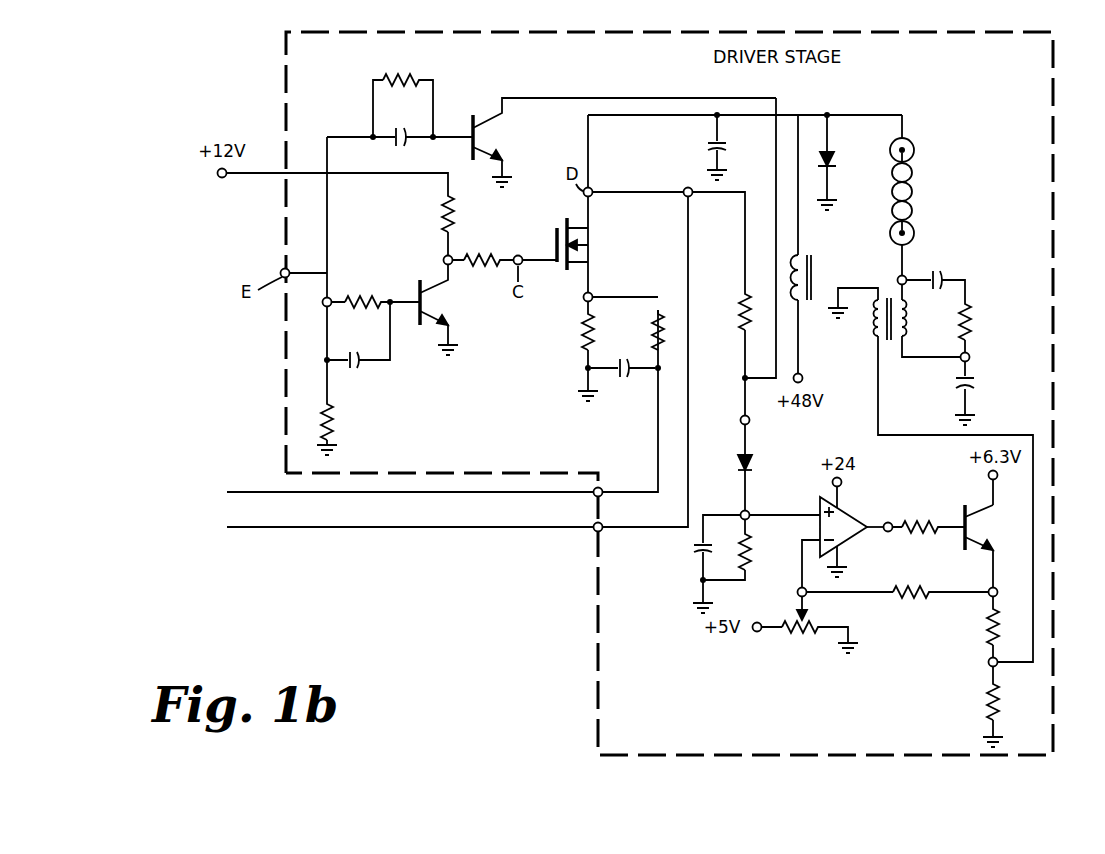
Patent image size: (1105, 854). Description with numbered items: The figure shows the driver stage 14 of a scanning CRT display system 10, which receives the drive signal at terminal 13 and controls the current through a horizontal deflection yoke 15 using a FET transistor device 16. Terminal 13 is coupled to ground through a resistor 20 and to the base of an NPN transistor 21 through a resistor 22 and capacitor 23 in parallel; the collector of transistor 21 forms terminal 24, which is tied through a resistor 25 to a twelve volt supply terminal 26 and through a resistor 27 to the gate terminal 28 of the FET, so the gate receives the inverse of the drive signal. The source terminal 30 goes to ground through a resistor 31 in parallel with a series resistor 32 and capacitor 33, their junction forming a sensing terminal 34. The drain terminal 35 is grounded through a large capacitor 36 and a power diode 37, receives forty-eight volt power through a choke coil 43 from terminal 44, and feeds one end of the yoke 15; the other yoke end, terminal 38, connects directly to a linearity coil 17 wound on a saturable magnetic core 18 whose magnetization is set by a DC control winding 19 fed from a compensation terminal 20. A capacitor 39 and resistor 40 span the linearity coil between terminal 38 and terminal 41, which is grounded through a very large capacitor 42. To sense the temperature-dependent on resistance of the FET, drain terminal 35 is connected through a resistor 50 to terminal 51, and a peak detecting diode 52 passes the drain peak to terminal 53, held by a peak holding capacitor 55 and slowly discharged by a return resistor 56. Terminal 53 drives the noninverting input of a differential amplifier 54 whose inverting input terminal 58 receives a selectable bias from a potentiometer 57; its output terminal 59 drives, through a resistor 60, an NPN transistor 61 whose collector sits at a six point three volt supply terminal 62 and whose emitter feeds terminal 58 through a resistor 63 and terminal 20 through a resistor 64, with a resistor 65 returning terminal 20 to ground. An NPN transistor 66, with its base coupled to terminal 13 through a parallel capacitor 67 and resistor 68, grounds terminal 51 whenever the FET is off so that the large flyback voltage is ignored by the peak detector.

The scanning CRT display system 10 is at (403, 595).
The output terminal 13 is at (283, 270).
The driver stage 14 is at (1054, 103).
The horizontal deflection yoke 15 is at (916, 191).
The FET transistor device 16 is at (557, 230).
The linearity coil 17 is at (910, 319).
The saturable magnetic core 18 is at (880, 340).
The DC control winding 19 is at (868, 336).
The terminal / resistor 20 is at (988, 665).
The NPN transistor 21 is at (440, 301).
The resistor 22 is at (365, 308).
The capacitor 23 is at (355, 372).
The terminal 24 is at (443, 262).
The resistor 25 is at (445, 212).
The 12 volt positive supply terminal 26 is at (218, 175).
The resistor 27 is at (484, 257).
The gate terminal 28 is at (518, 255).
The source terminal 30 is at (594, 296).
The resistor 31 is at (581, 328).
The resistor 32 is at (655, 330).
The capacitor 33 is at (626, 380).
The terminal 34 is at (603, 490).
The drain terminal 35 is at (593, 191).
The capacitor 36 is at (707, 145).
The power diode 37 is at (838, 157).
The terminal 38 is at (897, 278).
The capacitor 39 is at (937, 271).
The resistor 40 is at (972, 320).
The terminal 41 is at (970, 357).
The capacitor 42 is at (975, 386).
The choke coil 43 is at (808, 262).
The terminal 44 is at (803, 380).
The resistor 50 is at (740, 311).
The terminal 51 is at (738, 420).
The peak detecting diode 52 is at (754, 462).
The terminal 53 is at (750, 511).
The differential amplifier 54 is at (884, 523).
The peak holding capacitor 55 is at (693, 547).
The return to ground resistor 56 is at (752, 550).
The potentiometer 57 is at (802, 636).
The inverting input terminal 58 is at (797, 592).
The output terminal 59 is at (887, 532).
The resistor 60 is at (922, 520).
The NPN transistor 61 is at (978, 528).
The 6.3 volt positive supply terminal 62 is at (988, 477).
The resistor 63 is at (913, 585).
The resistor 64 is at (986, 627).
The resistor 65 is at (986, 698).
The NPN transistor 66 is at (490, 138).
The capacitor 67 is at (401, 130).
The resistor 68 is at (403, 72).